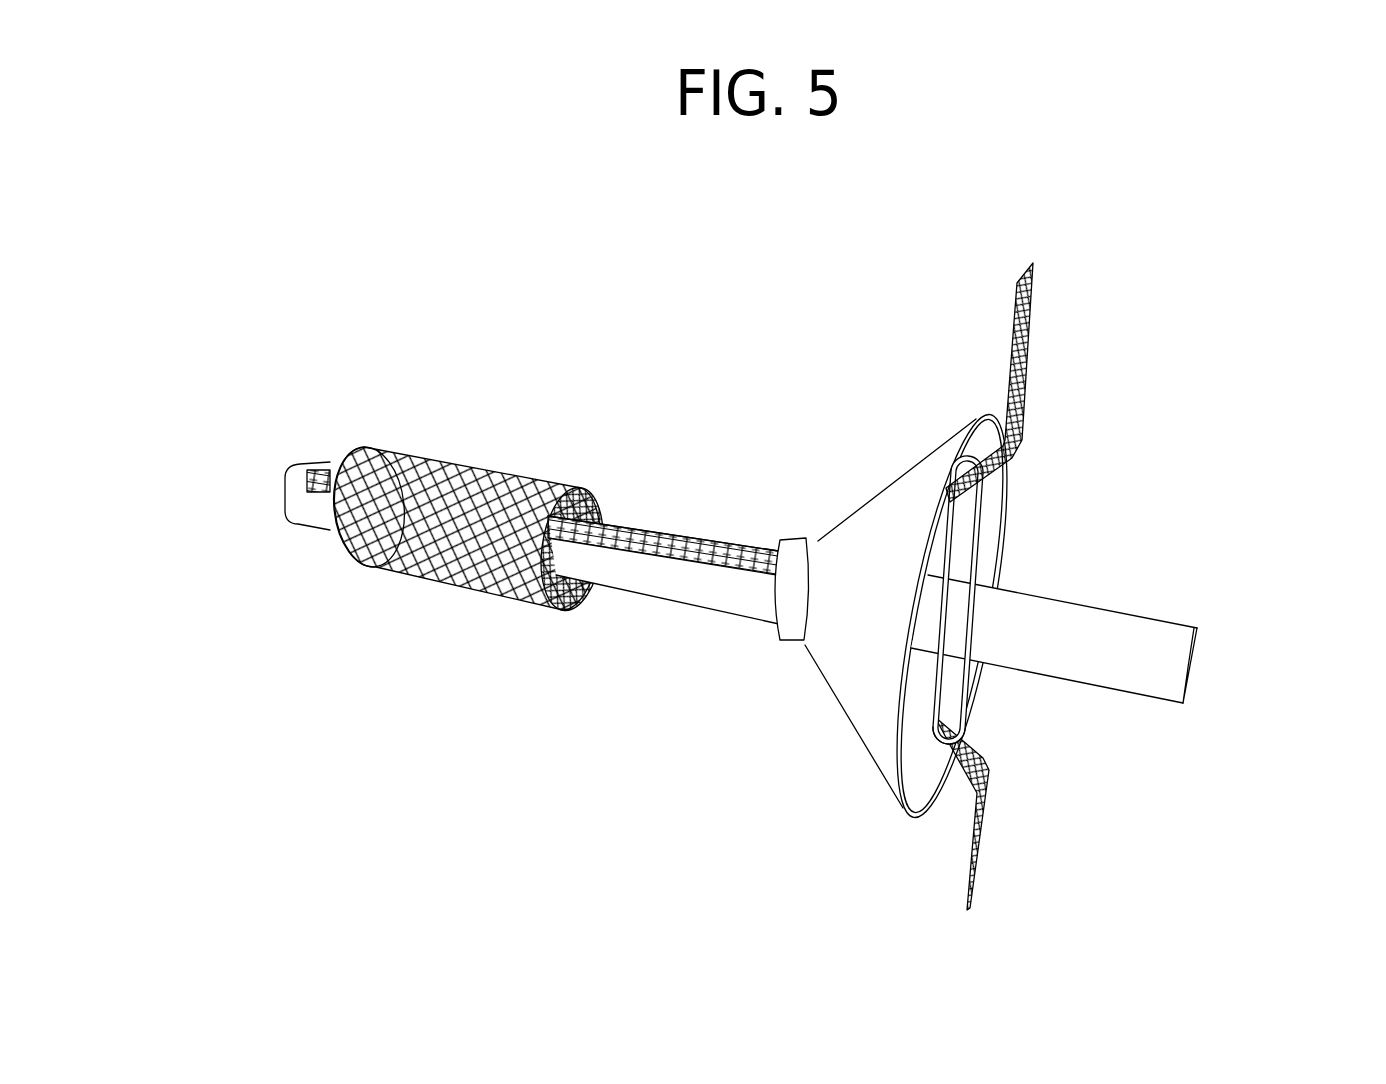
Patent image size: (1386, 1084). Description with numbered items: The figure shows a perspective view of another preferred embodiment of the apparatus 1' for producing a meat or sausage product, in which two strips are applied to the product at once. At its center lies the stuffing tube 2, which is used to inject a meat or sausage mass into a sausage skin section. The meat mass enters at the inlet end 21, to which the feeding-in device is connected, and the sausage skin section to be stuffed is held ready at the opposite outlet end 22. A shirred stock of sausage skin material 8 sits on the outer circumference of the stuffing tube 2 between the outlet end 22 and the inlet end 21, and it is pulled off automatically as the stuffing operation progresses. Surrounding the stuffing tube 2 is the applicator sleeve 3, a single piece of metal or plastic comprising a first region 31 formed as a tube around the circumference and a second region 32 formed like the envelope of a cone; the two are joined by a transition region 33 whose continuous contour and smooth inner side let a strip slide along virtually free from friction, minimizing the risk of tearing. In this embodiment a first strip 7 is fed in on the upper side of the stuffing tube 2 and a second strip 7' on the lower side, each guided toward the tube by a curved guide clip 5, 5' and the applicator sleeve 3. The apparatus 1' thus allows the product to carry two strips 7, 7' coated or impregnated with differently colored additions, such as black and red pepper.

The apparatus 1' is at (666, 476).
The stuffing tube 2 is at (1110, 620).
The inlet end 21 is at (1197, 658).
The outlet end 22 is at (275, 483).
The applicator sleeve 3 is at (897, 460).
The first region 31 is at (787, 603).
The second region 32 is at (875, 713).
The transition region 33 is at (800, 627).
The curved guide clip 5 is at (1008, 600).
The curved guide clip 5' is at (1003, 719).
The first strip 7 is at (1030, 382).
The second strip 7' is at (1026, 813).
The sausage skin material 8 is at (443, 470).